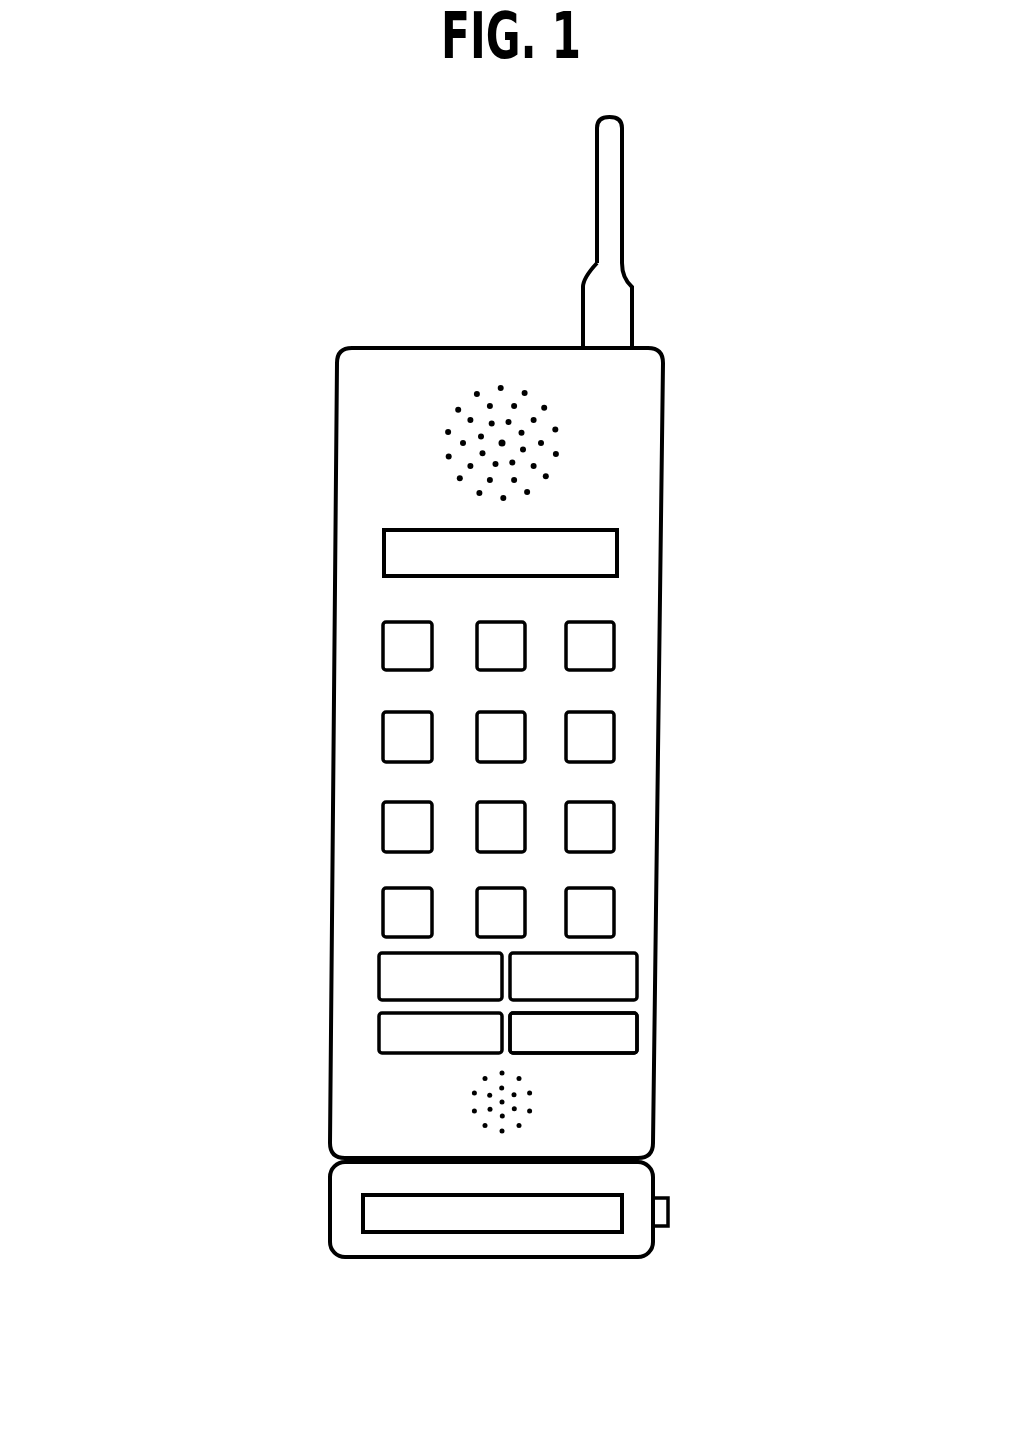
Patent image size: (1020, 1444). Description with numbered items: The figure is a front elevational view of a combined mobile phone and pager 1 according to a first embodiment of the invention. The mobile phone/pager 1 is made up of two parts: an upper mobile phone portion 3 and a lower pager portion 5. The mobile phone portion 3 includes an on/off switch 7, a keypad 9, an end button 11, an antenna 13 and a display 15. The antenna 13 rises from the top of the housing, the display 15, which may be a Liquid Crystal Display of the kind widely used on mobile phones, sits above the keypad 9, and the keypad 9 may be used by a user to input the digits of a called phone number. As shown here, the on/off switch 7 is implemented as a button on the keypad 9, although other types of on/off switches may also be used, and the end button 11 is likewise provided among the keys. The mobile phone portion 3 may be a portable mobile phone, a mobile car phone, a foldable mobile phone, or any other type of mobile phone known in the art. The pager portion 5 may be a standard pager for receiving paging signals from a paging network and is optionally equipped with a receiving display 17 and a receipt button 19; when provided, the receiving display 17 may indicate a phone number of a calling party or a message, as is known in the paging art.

The combined mobile phone and pager 1 is at (200, 356).
The mobile phone portion 3 is at (322, 806).
The pager portion 5 is at (320, 1203).
The on/off switch 7 is at (565, 1053).
The keypad 9 is at (689, 622).
The end button 11 is at (612, 968).
The antenna 13 is at (612, 229).
The display 15 is at (610, 556).
The receiving display 17 is at (560, 1220).
The receipt button 19 is at (668, 1212).